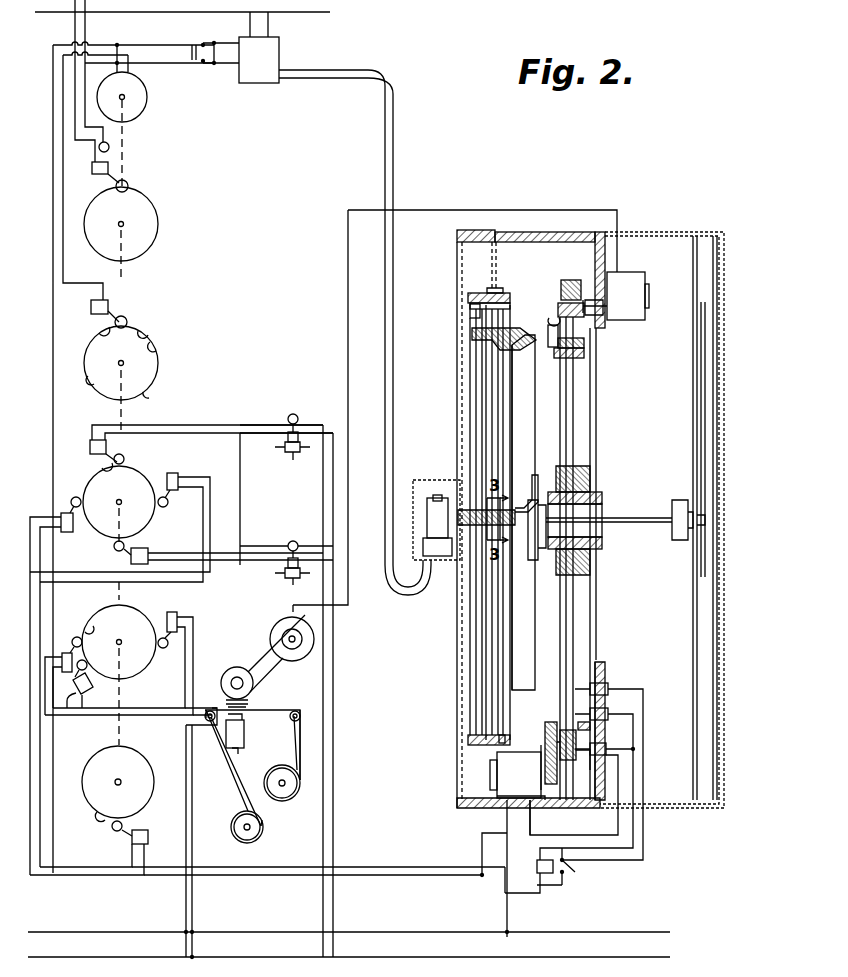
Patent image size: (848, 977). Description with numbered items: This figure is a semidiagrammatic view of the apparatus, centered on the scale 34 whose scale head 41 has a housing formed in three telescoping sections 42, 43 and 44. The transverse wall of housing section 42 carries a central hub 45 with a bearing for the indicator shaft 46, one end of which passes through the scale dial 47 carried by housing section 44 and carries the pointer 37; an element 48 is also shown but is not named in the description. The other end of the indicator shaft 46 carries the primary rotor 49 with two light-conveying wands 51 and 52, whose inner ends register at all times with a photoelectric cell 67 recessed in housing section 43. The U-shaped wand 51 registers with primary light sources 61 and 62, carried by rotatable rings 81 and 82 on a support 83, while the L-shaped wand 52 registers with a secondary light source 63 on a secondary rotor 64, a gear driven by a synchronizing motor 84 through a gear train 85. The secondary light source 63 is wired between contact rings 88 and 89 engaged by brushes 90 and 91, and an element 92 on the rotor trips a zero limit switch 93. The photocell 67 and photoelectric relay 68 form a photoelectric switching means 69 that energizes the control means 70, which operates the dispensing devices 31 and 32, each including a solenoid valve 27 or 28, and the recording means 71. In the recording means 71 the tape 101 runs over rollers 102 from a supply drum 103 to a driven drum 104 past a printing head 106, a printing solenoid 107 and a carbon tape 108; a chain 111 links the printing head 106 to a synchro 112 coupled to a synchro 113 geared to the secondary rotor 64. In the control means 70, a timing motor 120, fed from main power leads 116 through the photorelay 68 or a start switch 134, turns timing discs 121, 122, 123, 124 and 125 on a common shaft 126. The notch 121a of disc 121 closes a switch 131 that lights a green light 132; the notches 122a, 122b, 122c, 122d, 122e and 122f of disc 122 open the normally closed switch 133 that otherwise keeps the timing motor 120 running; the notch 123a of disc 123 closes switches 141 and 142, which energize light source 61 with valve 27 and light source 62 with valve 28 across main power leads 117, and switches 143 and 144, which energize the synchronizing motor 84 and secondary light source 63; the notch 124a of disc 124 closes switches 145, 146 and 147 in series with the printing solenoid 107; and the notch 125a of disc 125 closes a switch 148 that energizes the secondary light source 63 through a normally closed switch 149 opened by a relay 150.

The main power leads 116 is at (300, 14).
The photoelectric switching means 69 is at (292, 61).
The photoelectric relay 68 is at (270, 78).
The start switch 134 is at (196, 66).
The timing motor 120 is at (145, 98).
The green light 132 is at (109, 145).
The switch 131 is at (108, 165).
The notch 121a is at (128, 183).
The timing disc 121 is at (121, 233).
The control means 70 is at (208, 275).
The common shaft 126 is at (121, 273).
The switch 133 is at (91, 303).
The notch 122a is at (127, 319).
The notch 122b is at (99, 331).
The notch 122c is at (89, 382).
The notch 122d is at (150, 397).
The notch 122e is at (157, 347).
The notch 122f is at (146, 331).
The timing disc 122 is at (121, 378).
The switch 141 is at (90, 434).
The notch 123a is at (102, 467).
The timing disc 123 is at (119, 499).
The switch 144 is at (120, 527).
The switch 143 is at (66, 532).
The switch 142 is at (148, 550).
The primary light source 61 is at (293, 414).
The dispensing device 31 is at (269, 465).
The solenoid valve 27 is at (293, 460).
The primary light source 62 is at (293, 541).
The dispensing device 32 is at (267, 584).
The solenoid valve 28 is at (293, 585).
The notch 124a is at (86, 630).
The timing disc 124 is at (119, 663).
The switch 145 is at (121, 652).
The switch 147 is at (63, 645).
The switch 146 is at (92, 693).
The timing disc 125 is at (118, 782).
The notch 125a is at (97, 814).
The switch 148 is at (132, 844).
The synchro 112 is at (279, 625).
The chain 111 is at (262, 651).
The printing head 106 is at (224, 668).
The rollers 102 is at (208, 711).
The recording means 71 is at (263, 683).
The carbon tape 108 is at (248, 705).
The tape 101 is at (300, 748).
The printing solenoid 107 is at (230, 748).
The drum 104 is at (236, 815).
The supply drum 103 is at (284, 799).
The scale 34 is at (686, 189).
The housing section 43 is at (484, 230).
The housing section 42 is at (533, 232).
The housing section 44 is at (583, 232).
The scale head 41 is at (636, 225).
The synchro 113 is at (628, 278).
The plate 48 is at (721, 320).
The scale dial 47 is at (697, 387).
The pointer 37 is at (705, 435).
The support 83 is at (472, 293).
The rotatable ring 81 is at (470, 300).
The rotatable ring 82 is at (510, 330).
The primary rotor 49 is at (484, 410).
The wand 51 is at (492, 342).
The wand 52 is at (515, 377).
The contact ring 89 is at (584, 310).
The contact ring 88 is at (585, 345).
The secondary light source 63 is at (555, 355).
The secondary rotor 64 is at (596, 405).
The photoelectric cell 67 is at (437, 498).
The indicator shaft 46 is at (633, 503).
The central hub 45 is at (598, 535).
The brush 90 is at (608, 682).
The brush 91 is at (608, 706).
The element 92 is at (605, 728).
The zero limit switch 93 is at (606, 757).
The synchronizing motor 84 is at (500, 774).
The gear train 85 is at (565, 775).
The normally closed switch 149 is at (578, 866).
The relay 150 is at (551, 873).
The main power leads 117 is at (620, 938).